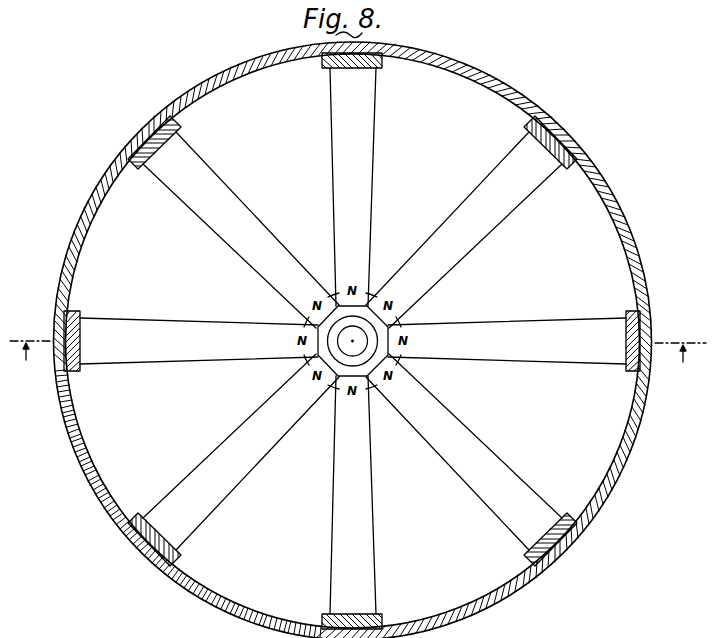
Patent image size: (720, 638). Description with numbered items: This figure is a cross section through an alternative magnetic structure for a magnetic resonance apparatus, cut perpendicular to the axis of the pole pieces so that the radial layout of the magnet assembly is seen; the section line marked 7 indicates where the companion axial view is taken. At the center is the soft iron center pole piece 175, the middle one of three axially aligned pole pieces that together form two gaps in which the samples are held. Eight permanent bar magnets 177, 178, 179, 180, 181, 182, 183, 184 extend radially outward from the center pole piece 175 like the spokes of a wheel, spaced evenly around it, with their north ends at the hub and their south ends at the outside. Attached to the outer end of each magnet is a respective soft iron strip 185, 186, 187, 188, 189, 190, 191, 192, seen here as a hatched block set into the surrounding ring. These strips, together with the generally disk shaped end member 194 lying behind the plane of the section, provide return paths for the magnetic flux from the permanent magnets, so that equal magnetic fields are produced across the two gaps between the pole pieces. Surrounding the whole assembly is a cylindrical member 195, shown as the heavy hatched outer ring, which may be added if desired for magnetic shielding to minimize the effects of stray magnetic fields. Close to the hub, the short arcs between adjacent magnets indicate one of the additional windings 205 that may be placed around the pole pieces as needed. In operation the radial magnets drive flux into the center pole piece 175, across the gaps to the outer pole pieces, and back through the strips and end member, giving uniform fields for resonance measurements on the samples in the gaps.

The section line 7- 7 is at (358, 342).
The center pole piece 175 is at (386, 350).
The permanent bar magnet 177 is at (187, 355).
The permanent bar magnet 178 is at (235, 480).
The permanent bar magnet 179 is at (371, 499).
The permanent bar magnet 180 is at (462, 432).
The permanent bar magnet 181 is at (512, 325).
The permanent bar magnet 182 is at (462, 205).
The permanent bar magnet 183 is at (331, 148).
The permanent bar magnet 184 is at (206, 218).
The soft iron strip 185 is at (75, 308).
The soft iron strip 186 is at (134, 512).
The soft iron strip 187 is at (322, 618).
The soft iron strip 188 is at (520, 556).
The soft iron strip 189 is at (630, 374).
The soft iron strip 190 is at (556, 176).
The soft iron strip 191 is at (384, 64).
The soft iron strip 192 is at (186, 126).
The disk shaped end member 194 is at (353, 321).
The cylindrical member 195 is at (630, 462).
The winding 205 is at (400, 320).